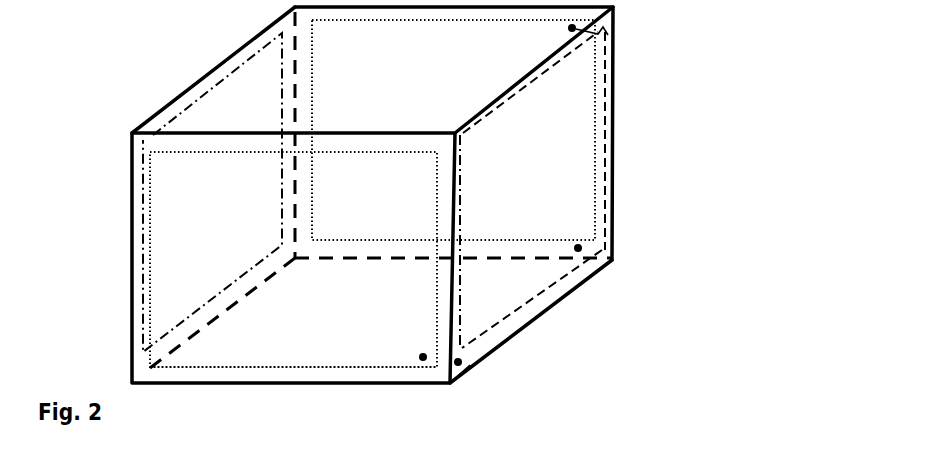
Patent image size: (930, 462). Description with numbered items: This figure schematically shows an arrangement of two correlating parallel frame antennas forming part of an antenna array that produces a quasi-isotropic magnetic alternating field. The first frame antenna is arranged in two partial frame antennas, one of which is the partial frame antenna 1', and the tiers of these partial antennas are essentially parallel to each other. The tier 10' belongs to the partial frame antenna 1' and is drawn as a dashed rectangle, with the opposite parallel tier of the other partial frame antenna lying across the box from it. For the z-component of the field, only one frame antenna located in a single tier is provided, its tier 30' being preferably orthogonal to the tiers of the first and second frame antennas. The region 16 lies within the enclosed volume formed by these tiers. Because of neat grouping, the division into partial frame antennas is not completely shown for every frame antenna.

The tier of partial frame antenna 10' is at (652, 48).
The partial frame antenna 1' is at (591, 190).
The tier of frame antenna 30' is at (536, 380).
The interior space 16 is at (479, 241).